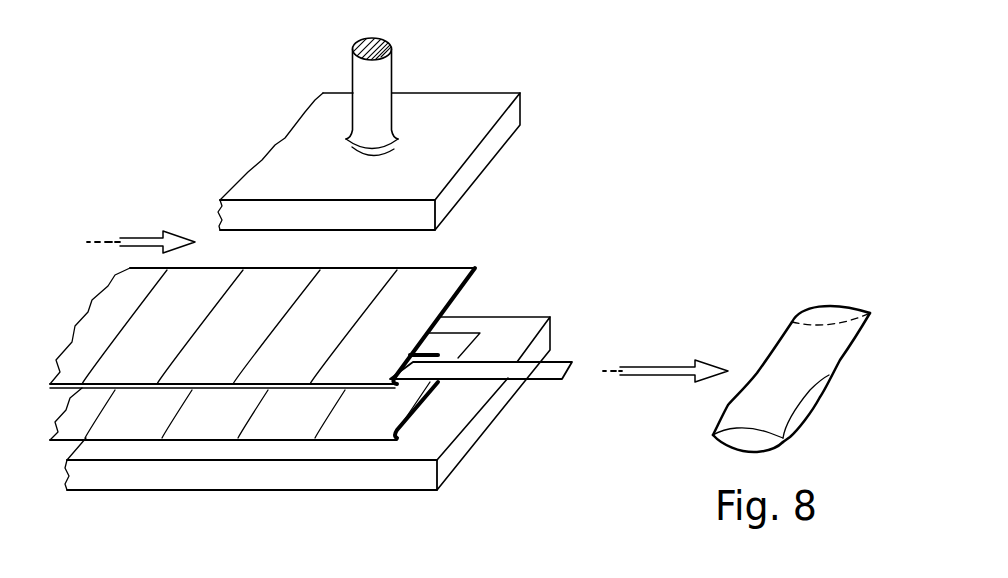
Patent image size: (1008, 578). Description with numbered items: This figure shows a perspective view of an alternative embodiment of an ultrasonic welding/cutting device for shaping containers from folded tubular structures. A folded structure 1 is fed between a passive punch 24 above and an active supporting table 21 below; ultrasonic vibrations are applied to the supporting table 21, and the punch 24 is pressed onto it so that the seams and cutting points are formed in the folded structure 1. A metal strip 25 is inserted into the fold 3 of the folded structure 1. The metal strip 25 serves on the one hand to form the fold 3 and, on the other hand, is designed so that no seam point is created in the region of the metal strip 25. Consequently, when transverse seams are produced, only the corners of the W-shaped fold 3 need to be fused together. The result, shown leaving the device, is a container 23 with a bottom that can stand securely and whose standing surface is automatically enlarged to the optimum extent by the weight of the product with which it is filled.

The folded structure 1 is at (113, 315).
The fold 3 is at (90, 408).
The active supporting table 21 is at (210, 477).
The container 23 is at (818, 374).
The passive punch 24 is at (477, 103).
The metal strip 25 is at (537, 367).